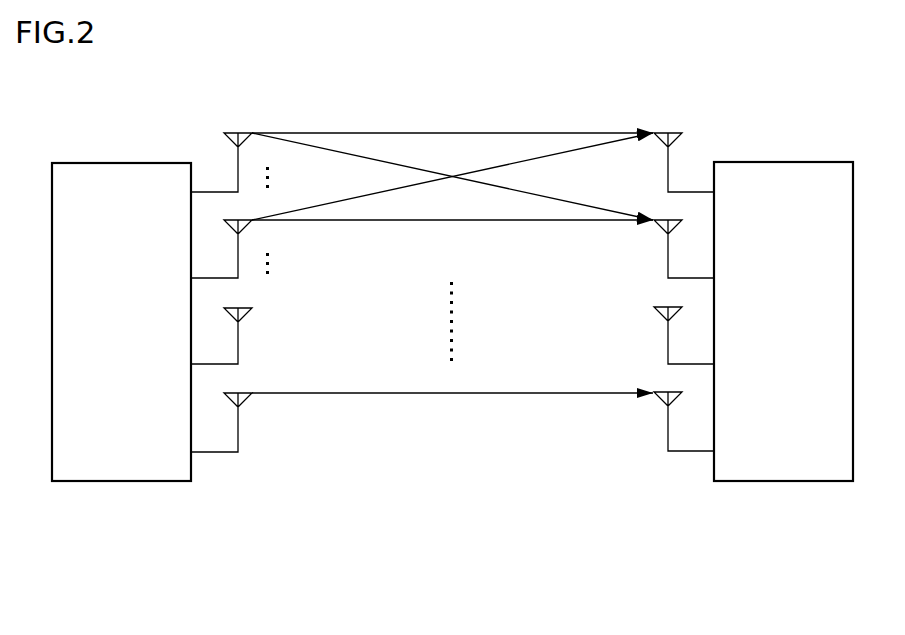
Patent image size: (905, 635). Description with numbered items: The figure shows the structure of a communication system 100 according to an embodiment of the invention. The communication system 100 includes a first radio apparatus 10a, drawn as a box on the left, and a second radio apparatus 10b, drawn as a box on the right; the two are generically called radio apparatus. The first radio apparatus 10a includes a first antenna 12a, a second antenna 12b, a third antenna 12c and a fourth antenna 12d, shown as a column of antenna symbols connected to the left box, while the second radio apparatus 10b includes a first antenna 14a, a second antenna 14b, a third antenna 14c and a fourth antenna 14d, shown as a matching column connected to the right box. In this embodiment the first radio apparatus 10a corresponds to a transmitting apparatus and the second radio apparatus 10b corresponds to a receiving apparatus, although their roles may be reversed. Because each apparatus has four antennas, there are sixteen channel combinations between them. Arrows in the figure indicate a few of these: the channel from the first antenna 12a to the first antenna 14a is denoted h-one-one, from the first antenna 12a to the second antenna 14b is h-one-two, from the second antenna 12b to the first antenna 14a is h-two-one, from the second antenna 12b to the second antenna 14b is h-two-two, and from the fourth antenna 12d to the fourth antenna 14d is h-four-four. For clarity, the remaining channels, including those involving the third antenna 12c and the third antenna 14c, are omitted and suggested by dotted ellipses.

The communication system 100 is at (476, 627).
The first radio apparatus 10a is at (120, 482).
The second radio apparatus 10b is at (785, 481).
The first antenna 12a is at (213, 190).
The second antenna 12b is at (215, 278).
The third antenna 12c is at (215, 364).
The fourth antenna 12d is at (215, 452).
The first antenna 14a is at (692, 190).
The second antenna 14b is at (690, 278).
The third antenna 14c is at (690, 364).
The fourth antenna 14d is at (690, 451).